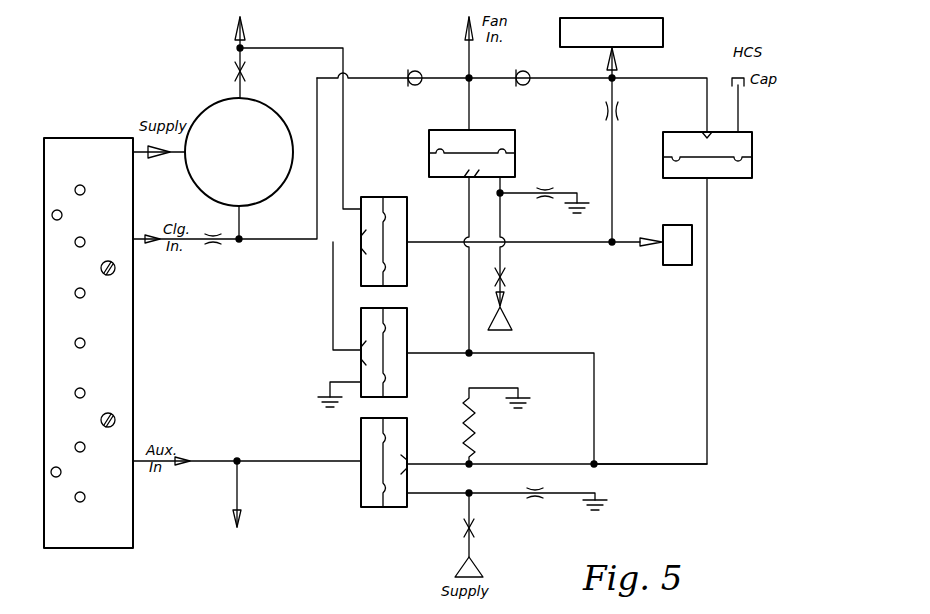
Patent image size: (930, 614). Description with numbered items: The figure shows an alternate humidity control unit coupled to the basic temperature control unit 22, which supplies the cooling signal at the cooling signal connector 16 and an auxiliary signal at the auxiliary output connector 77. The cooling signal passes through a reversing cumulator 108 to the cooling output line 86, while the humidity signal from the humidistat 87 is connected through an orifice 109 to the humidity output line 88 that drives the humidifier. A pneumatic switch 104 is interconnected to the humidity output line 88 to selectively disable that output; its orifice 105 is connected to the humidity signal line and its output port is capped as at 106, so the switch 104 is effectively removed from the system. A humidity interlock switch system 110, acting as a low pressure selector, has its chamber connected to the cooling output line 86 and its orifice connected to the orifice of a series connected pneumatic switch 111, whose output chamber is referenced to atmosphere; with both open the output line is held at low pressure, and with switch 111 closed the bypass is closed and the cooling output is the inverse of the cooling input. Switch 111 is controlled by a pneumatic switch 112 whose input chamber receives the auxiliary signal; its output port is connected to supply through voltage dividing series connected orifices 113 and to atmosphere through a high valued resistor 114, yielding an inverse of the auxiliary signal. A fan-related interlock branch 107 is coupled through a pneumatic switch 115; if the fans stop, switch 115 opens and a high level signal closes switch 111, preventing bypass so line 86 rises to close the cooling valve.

The cooling signal connector 16 is at (85, 293).
The temperature control unit 22 is at (134, 345).
The auxiliary output connector 77 is at (85, 391).
The cooling output line 86 is at (245, 42).
The humidistat 87 is at (665, 266).
The humidity output line 88 is at (617, 77).
The pneumatic switch 104 is at (717, 175).
The orifice of pneumatic switch 105 is at (716, 143).
The capped port 106 is at (734, 80).
The fan-related interlock branch 107 is at (452, 62).
The reversing cumulator 108 is at (252, 133).
The orifice 109 is at (620, 110).
The humidity interlock switch 110 is at (403, 195).
The pneumatic switch 111 is at (408, 330).
The pneumatic switch 112 is at (408, 441).
The series connected orifices 113 is at (535, 498).
The high valued resistor 114 is at (475, 440).
The pneumatic switch 115 is at (518, 137).